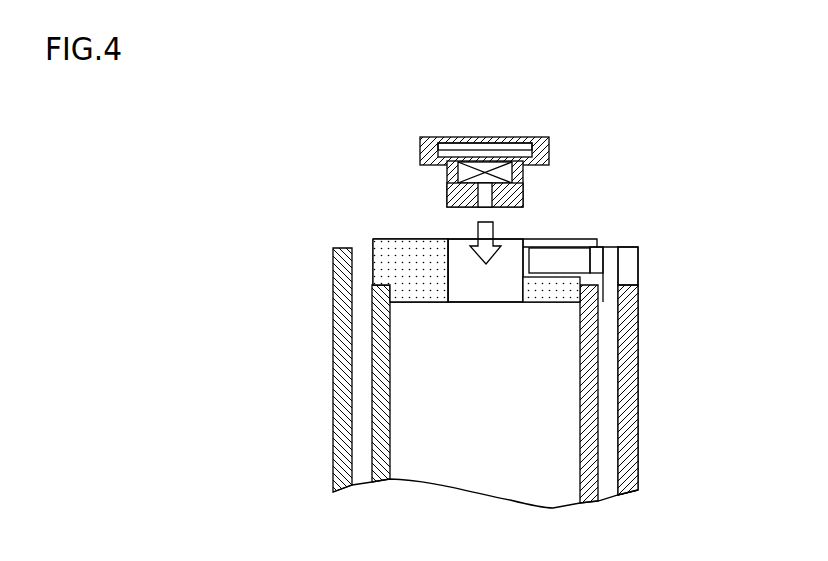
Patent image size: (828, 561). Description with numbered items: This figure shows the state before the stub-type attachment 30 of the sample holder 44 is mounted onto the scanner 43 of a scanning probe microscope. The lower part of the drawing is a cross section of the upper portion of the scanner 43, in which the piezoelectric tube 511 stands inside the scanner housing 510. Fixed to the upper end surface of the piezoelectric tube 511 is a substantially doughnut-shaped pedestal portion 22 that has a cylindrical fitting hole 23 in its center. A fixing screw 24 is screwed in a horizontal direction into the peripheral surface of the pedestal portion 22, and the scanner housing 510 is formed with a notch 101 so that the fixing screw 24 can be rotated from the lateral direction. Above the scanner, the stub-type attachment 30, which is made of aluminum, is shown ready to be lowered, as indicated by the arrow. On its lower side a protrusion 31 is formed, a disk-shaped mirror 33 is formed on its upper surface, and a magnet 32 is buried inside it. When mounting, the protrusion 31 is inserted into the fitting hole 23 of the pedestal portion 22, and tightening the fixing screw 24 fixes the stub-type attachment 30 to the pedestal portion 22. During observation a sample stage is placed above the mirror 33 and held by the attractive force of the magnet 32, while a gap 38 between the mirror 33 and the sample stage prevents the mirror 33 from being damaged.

The stub-type attachment 30 is at (480, 146).
The protrusion 31 is at (516, 197).
The magnet 32 is at (503, 172).
The mirror 33 is at (488, 150).
The gap 38 is at (517, 144).
The pedestal portion 22 is at (393, 246).
The fitting hole 23 is at (458, 250).
The fixing screw 24 is at (596, 262).
The sample holder 44 is at (341, 215).
The notch 101 is at (628, 268).
The scanner 43 is at (630, 388).
The piezoelectric tube 511 is at (380, 378).
The scanner housing 510 is at (334, 417).